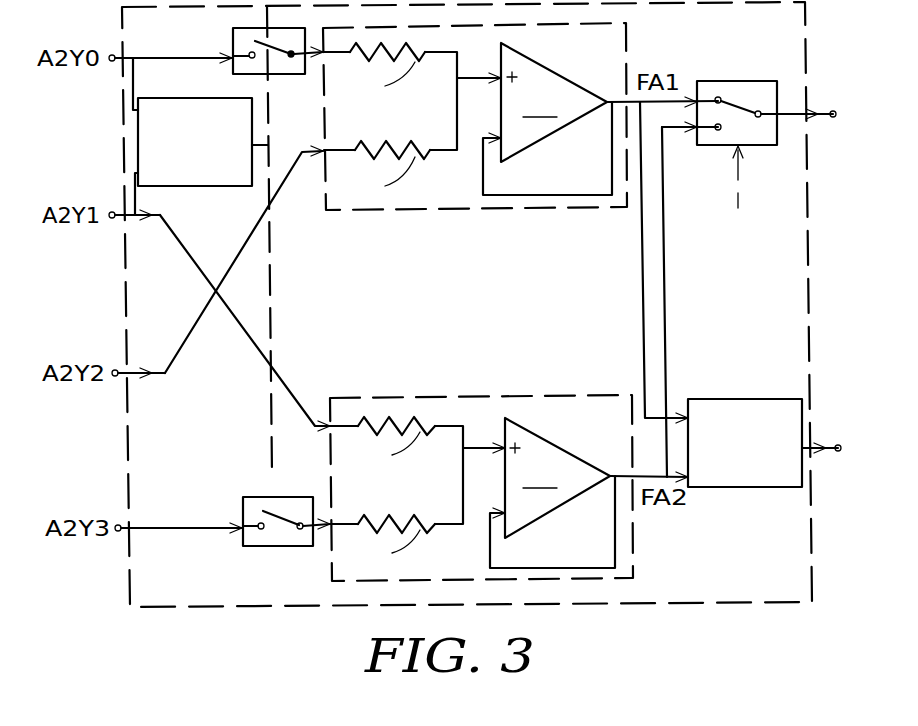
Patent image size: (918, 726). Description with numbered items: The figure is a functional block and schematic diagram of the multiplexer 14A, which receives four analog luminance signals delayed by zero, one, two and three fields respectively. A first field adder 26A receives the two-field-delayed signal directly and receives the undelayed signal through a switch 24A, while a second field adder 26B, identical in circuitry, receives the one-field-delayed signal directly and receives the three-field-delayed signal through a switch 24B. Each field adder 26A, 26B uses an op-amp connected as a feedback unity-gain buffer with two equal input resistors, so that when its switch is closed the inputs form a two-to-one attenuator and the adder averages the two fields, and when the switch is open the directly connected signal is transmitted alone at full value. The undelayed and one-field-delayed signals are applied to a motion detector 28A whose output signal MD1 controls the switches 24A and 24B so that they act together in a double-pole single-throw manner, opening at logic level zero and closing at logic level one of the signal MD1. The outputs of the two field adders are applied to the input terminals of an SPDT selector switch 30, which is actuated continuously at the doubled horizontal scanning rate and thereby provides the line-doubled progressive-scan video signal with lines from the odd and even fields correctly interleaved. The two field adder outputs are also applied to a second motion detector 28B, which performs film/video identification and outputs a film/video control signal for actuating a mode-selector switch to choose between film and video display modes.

The multiplexer 14A is at (783, 583).
The switch 24A is at (260, 29).
The switch 24B is at (268, 498).
The first field adder 26A is at (470, 205).
The second field adder 26B is at (473, 400).
The motion detector 28A is at (230, 98).
The motion detector 28B is at (763, 405).
The SPDT selector switch 30 is at (745, 83).
The motion detector output signal MD1 is at (270, 303).